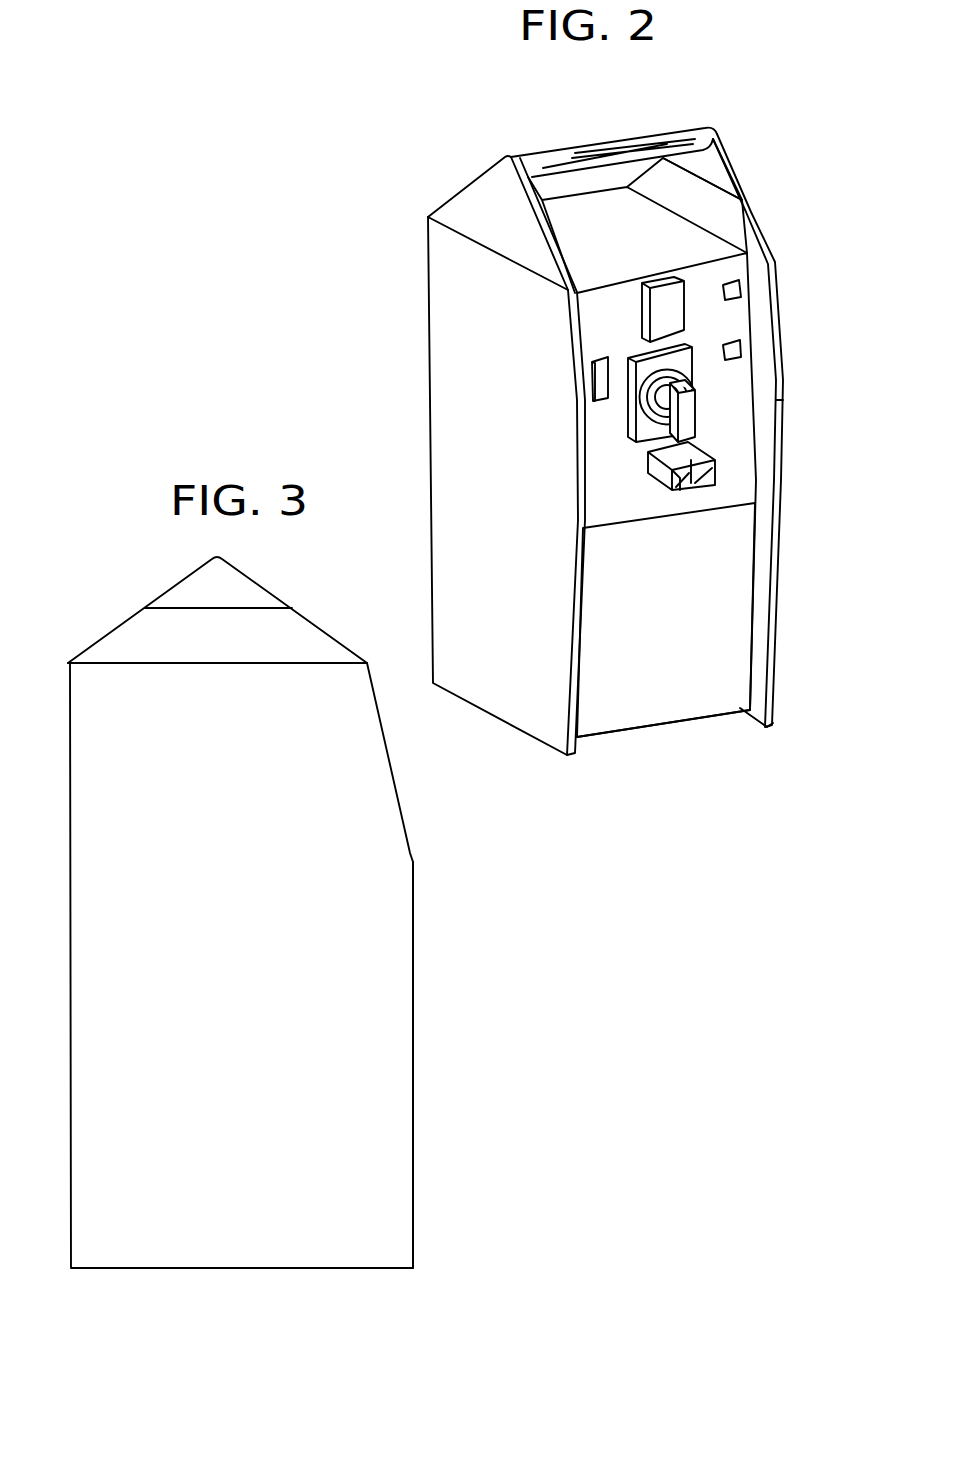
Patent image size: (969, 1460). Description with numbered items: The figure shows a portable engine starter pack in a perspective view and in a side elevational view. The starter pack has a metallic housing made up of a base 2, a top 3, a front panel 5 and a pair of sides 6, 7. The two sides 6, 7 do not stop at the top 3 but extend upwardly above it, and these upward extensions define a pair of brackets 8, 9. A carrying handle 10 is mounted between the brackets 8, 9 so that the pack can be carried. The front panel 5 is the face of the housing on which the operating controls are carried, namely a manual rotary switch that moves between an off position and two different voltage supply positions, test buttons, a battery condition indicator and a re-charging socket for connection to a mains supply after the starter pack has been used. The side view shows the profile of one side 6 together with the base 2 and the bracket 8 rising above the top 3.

In FIG. 3, the base 2 is at (280, 946).
In FIG. 2, the top 3 is at (622, 239).
In FIG. 2, the front panel 5 is at (668, 697).
In FIG. 2, the side 6 is at (457, 385).
In FIG. 3, the side 6 is at (383, 1002).
In FIG. 2, the side 7 is at (757, 320).
In FIG. 2, the bracket 8 is at (462, 205).
In FIG. 3, the bracket 8 is at (127, 637).
In FIG. 2, the bracket 9 is at (715, 165).
In FIG. 2, the carrying handle 10 is at (617, 147).